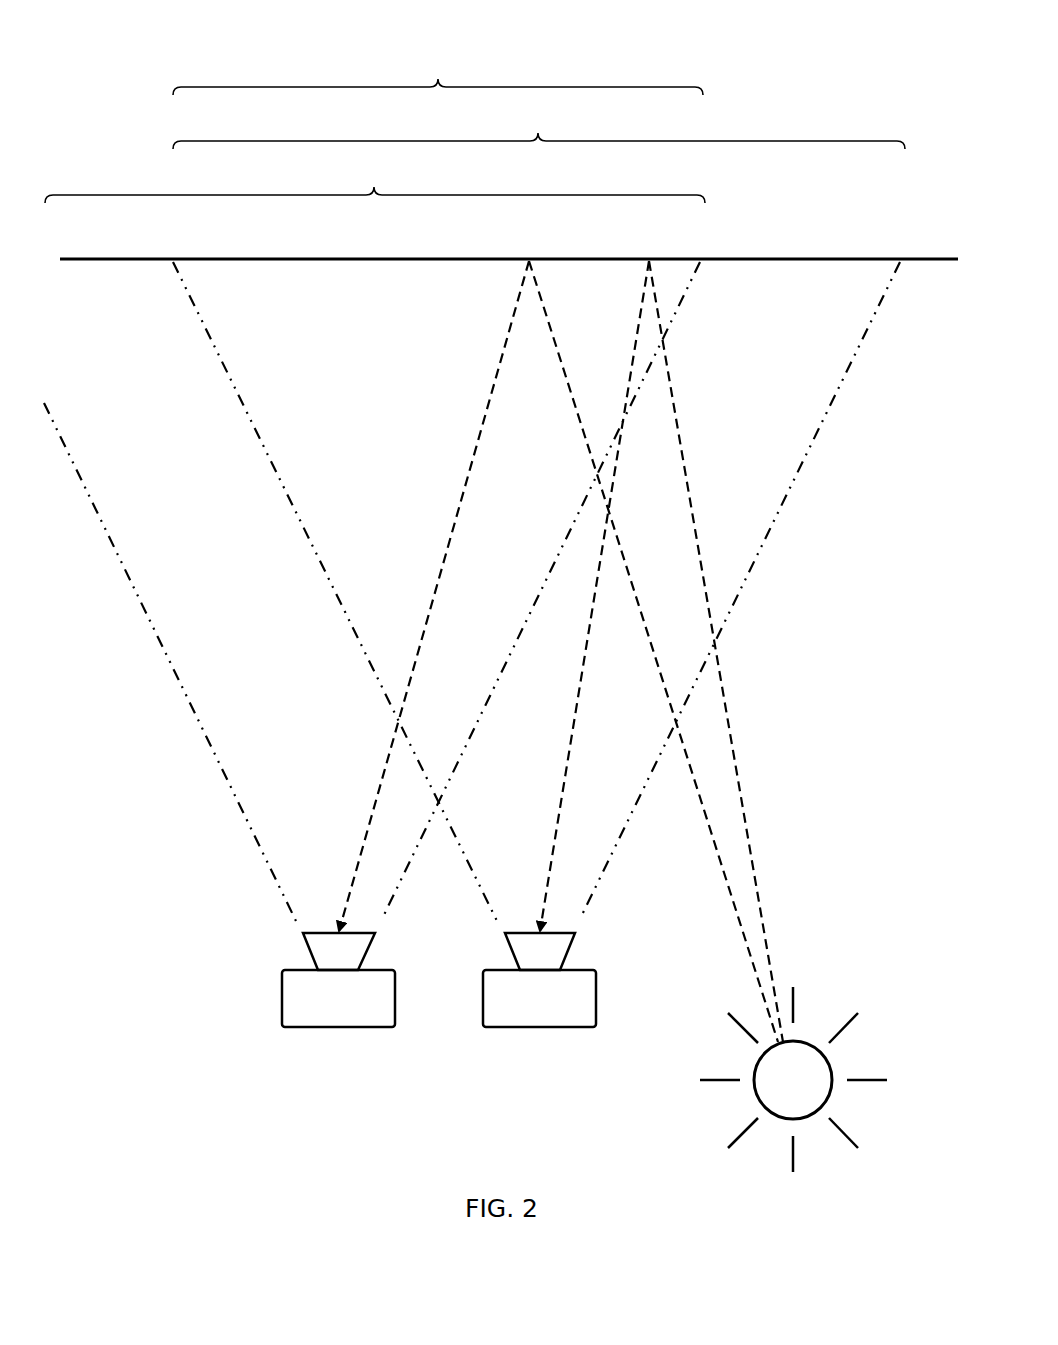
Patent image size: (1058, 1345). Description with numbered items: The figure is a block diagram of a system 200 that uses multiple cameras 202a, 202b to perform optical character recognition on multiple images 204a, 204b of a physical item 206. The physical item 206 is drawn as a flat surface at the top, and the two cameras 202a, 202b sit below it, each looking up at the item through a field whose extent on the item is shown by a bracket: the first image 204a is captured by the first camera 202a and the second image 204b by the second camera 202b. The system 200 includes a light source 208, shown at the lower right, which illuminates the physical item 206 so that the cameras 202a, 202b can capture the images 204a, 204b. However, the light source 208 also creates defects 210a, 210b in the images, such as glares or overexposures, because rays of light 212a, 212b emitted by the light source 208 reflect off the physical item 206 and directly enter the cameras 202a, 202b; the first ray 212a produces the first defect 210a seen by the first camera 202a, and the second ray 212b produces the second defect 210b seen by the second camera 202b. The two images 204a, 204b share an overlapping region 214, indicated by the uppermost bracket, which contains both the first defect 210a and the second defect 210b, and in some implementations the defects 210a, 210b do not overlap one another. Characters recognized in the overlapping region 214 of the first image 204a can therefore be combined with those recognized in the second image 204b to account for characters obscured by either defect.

The system 200 is at (116, 54).
The first camera 202a is at (372, 644).
The second camera 202b is at (536, 644).
The first image 204a is at (375, 182).
The second image 204b is at (539, 128).
The physical item 206 is at (856, 258).
The light source 208 is at (793, 1079).
The first defect 210a is at (535, 256).
The second defect 210b is at (655, 256).
The first ray of light 212a is at (706, 828).
The second ray of light 212b is at (742, 797).
The overlapping region 214 is at (438, 74).